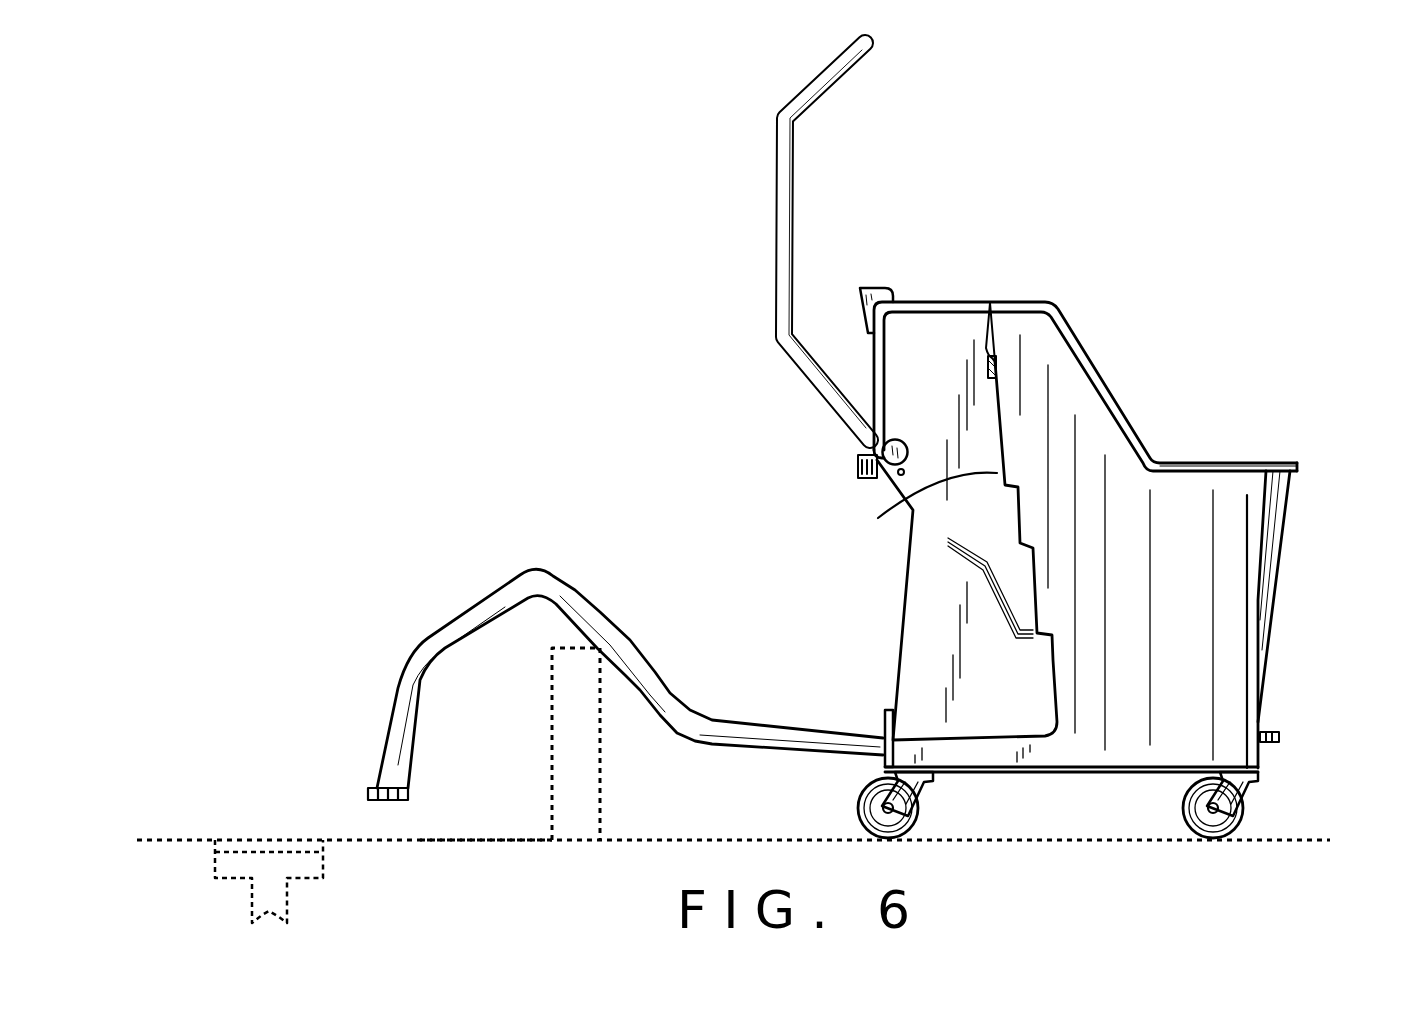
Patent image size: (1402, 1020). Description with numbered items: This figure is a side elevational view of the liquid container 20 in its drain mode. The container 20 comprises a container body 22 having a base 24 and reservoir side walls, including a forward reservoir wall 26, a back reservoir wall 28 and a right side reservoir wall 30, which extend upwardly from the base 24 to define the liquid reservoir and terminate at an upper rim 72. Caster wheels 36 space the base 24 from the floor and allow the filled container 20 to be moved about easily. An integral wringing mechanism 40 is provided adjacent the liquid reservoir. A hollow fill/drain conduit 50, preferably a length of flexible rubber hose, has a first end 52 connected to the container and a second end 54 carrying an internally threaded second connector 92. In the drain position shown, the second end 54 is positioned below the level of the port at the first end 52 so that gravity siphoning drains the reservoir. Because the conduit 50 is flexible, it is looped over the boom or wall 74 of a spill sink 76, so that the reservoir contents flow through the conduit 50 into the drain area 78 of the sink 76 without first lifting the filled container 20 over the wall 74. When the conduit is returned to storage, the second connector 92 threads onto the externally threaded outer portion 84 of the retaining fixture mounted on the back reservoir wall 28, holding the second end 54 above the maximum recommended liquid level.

The liquid container 20 is at (1067, 440).
The container body 22 is at (1032, 294).
The base 24 is at (1063, 775).
The forward reservoir wall 26 is at (1270, 611).
The back reservoir wall 28 is at (878, 518).
The right side reservoir wall 30 is at (1217, 573).
The caster wheels 36 is at (915, 792).
The wringing mechanism 40 is at (948, 289).
The fill/drain conduit 50 is at (606, 684).
The first end 52 is at (876, 740).
The second end 54 is at (378, 757).
The upper rim 72 is at (1237, 463).
The boom or wall 74 is at (600, 720).
The spill sink 76 is at (526, 779).
The drain area 78 is at (237, 840).
The externally threaded outer portion 84 is at (990, 303).
The second connector 92 is at (410, 797).